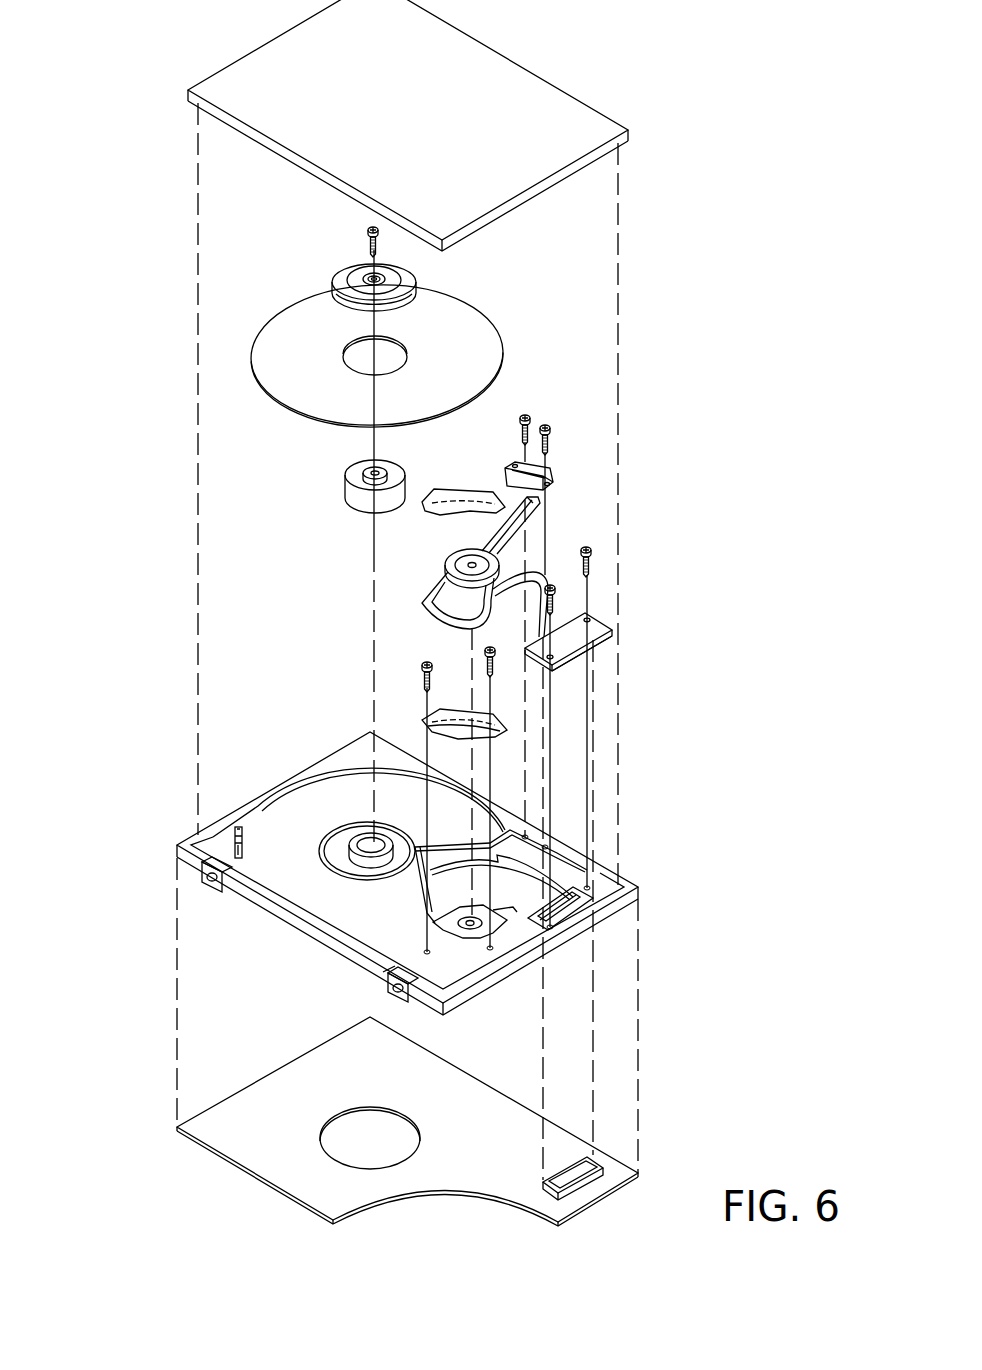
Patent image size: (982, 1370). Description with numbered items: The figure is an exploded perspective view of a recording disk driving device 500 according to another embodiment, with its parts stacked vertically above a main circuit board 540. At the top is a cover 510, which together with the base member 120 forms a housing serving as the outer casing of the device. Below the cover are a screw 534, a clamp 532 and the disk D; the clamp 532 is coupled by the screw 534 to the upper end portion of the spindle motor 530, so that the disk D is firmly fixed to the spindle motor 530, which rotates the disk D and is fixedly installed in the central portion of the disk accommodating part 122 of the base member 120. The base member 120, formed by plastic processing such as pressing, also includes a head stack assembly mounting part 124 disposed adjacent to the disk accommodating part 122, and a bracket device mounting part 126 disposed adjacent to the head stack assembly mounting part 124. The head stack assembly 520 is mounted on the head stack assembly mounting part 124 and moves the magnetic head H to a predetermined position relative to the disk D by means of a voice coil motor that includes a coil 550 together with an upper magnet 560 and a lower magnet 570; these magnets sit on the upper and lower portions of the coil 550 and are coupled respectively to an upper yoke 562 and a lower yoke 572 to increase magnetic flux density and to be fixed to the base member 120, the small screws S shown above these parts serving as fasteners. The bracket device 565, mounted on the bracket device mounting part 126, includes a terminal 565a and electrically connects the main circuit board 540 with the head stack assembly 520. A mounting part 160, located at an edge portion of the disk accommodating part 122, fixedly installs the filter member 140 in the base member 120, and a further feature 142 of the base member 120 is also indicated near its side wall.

The recording disk driving device 500 is at (670, 33).
The cover 510 is at (235, 78).
The screw 534 is at (366, 228).
The clamp 532 is at (340, 283).
The disk D is at (275, 359).
The spindle motor 530 is at (353, 483).
The upper yoke 562 is at (448, 488).
The head H is at (517, 466).
The screw S is at (525, 416).
The upper magnet 560 is at (455, 510).
The head stack assembly 520 is at (412, 565).
The coil 550 is at (443, 602).
The bracket device 565 is at (612, 628).
The terminal 565a is at (555, 673).
The lower magnet 570 is at (437, 708).
The lower yoke 572 is at (445, 718).
The base member 120 is at (617, 888).
The disk accommodating part 122 is at (296, 820).
The head stack assembly mounting part 124 is at (456, 960).
The bracket device mounting part 126 is at (595, 890).
The filter member 140 is at (240, 828).
The side wall 142 is at (383, 972).
The mounting part 160 is at (265, 853).
The main circuit board 540 is at (253, 1150).